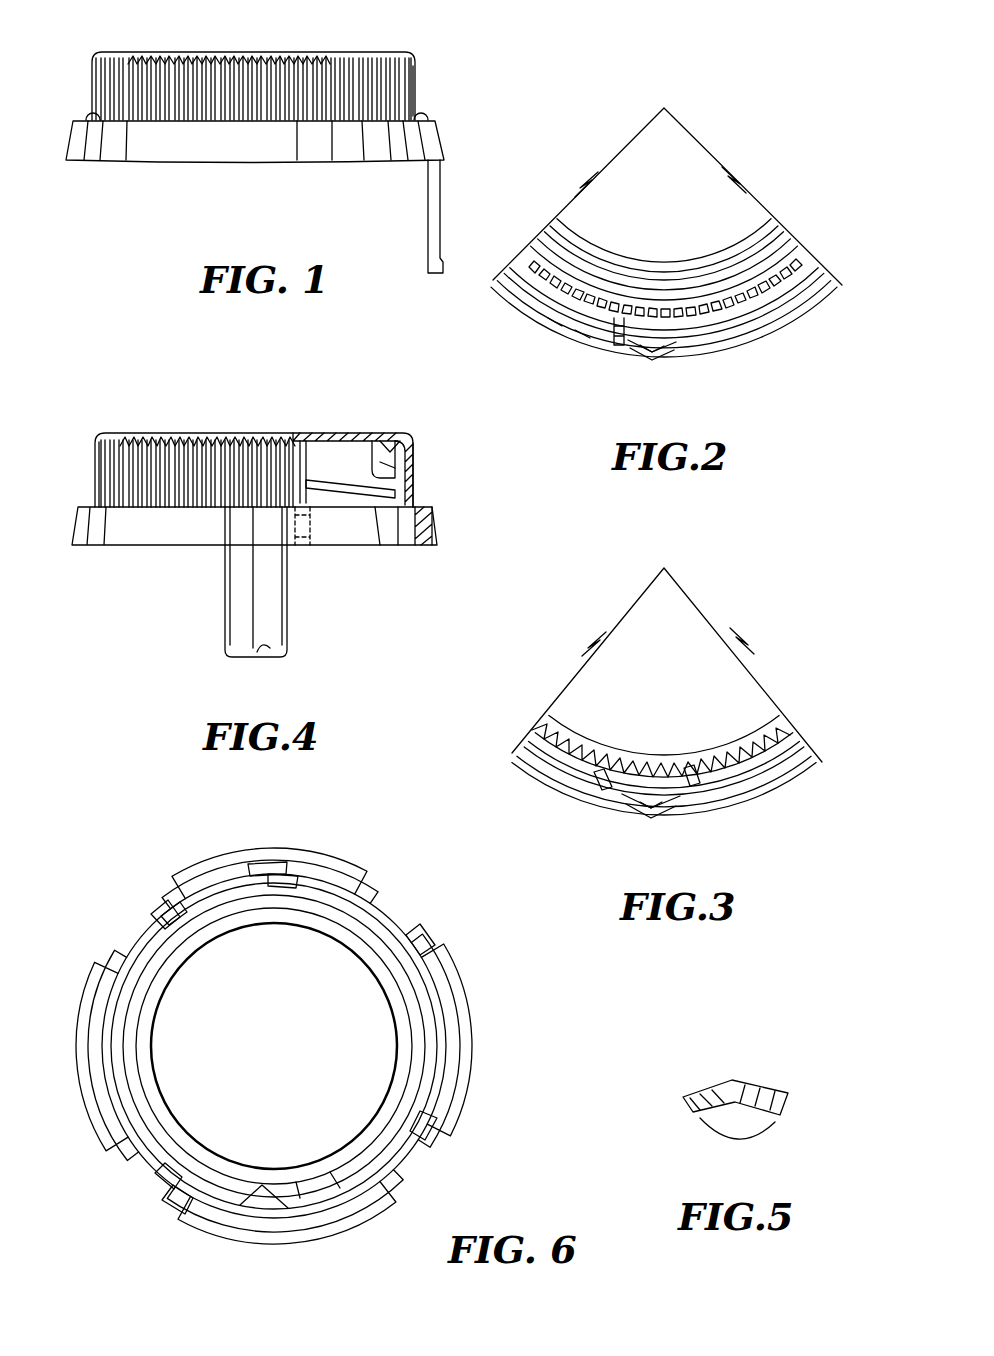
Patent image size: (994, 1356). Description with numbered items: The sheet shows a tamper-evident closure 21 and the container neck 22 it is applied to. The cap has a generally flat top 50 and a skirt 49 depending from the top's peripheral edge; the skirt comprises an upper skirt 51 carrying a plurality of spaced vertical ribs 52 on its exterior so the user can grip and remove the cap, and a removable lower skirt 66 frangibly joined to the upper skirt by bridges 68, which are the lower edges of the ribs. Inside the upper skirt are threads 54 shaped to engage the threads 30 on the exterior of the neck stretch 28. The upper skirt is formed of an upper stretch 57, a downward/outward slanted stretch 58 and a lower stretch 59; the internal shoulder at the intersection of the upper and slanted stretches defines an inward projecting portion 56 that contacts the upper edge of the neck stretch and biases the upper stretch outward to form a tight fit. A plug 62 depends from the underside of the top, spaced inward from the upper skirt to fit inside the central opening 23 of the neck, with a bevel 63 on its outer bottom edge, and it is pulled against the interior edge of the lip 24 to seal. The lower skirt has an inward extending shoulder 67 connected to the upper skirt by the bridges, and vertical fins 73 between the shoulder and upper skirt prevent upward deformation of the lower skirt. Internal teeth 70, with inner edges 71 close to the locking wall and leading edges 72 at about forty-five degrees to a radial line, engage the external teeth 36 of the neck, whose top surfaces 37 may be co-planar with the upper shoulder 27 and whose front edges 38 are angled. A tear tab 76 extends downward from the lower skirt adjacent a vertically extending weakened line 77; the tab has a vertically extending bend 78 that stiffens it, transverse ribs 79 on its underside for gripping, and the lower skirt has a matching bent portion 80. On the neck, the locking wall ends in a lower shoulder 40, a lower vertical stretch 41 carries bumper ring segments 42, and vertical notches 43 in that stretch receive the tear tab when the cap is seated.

In FIG. 1, the closure 21 is at (412, 40).
In FIG. 6, the container neck 22 is at (389, 870).
In FIG. 6, the central opening 23 is at (380, 1012).
In FIG. 6, the lip 24 is at (395, 1042).
In FIG. 6, the upper shoulder 27 is at (404, 985).
In FIG. 6, the neck stretch 28 is at (160, 1168).
In FIG. 6, the threads 30 is at (425, 1140).
In FIG. 6, the external tooth 36 is at (268, 862).
In FIG. 6, the top surface 37 is at (160, 905).
In FIG. 6, the front edges 38 is at (305, 876).
In FIG. 6, the lower shoulder 40 is at (236, 1220).
In FIG. 6, the lower vertical stretch 41 is at (342, 1200).
In FIG. 6, the bumper ring segments 42 is at (92, 968).
In FIG. 6, the vertical notches 43 is at (418, 935).
In FIG. 1, the skirt 49 is at (418, 92).
In FIG. 1, the top 50 is at (172, 54).
In FIG. 2, the top 50 is at (725, 168).
In FIG. 3, the top 50 is at (725, 648).
In FIG. 4, the top 50 is at (166, 436).
In FIG. 1, the upper skirt 51 is at (418, 78).
In FIG. 2, the upper skirt 51 is at (812, 240).
In FIG. 3, the upper skirt 51 is at (545, 722).
In FIG. 4, the upper skirt 51 is at (98, 484).
In FIG. 1, the vertical ribs 52 is at (308, 54).
In FIG. 3, the vertical ribs 52 is at (790, 720).
In FIG. 4, the vertical ribs 52 is at (100, 455).
In FIG. 2, the threads 54 is at (555, 272).
In FIG. 4, the threads 54 is at (301, 440).
In FIG. 2, the inward projecting portion 56 is at (608, 272).
In FIG. 4, the inward projecting portion 56 is at (374, 448).
In FIG. 4, the upper stretch 57 is at (402, 443).
In FIG. 4, the downward/outward slanted stretch 58 is at (410, 441).
In FIG. 4, the lower stretch 59 is at (410, 465).
In FIG. 2, the plug 62 is at (778, 230).
In FIG. 4, the plug 62 is at (346, 436).
In FIG. 4, the bevel 63 is at (366, 540).
In FIG. 1, the lower skirt 66 is at (120, 142).
In FIG. 3, the lower skirt 66 is at (530, 754).
In FIG. 4, the lower skirt 66 is at (135, 540).
In FIG. 3, the inward extending shoulder 67 is at (800, 745).
In FIG. 4, the inward extending shoulder 67 is at (430, 510).
In FIG. 2, the bridges 68 is at (822, 258).
In FIG. 2, the internal teeth 70 is at (565, 322).
In FIG. 4, the internal teeth 70 is at (405, 545).
In FIG. 2, the inner edges 71 is at (524, 300).
In FIG. 2, the leading edges 72 is at (548, 318).
In FIG. 1, the vertical fins 73 is at (90, 116).
In FIG. 3, the vertical fins 73 is at (600, 785).
In FIG. 1, the tear tab 76 is at (445, 197).
In FIG. 2, the tear tab 76 is at (638, 356).
In FIG. 3, the tear tab 76 is at (635, 806).
In FIG. 4, the tear tab 76 is at (236, 650).
In FIG. 5, the tear tab 76 is at (768, 1088).
In FIG. 2, the weakened line 77 is at (616, 340).
In FIG. 4, the weakened line 77 is at (305, 545).
In FIG. 2, the bend 78 is at (654, 360).
In FIG. 3, the bend 78 is at (657, 810).
In FIG. 4, the bend 78 is at (270, 652).
In FIG. 5, the transverse ribs 79 is at (700, 1118).
In FIG. 4, the bent portion 80 is at (232, 530).